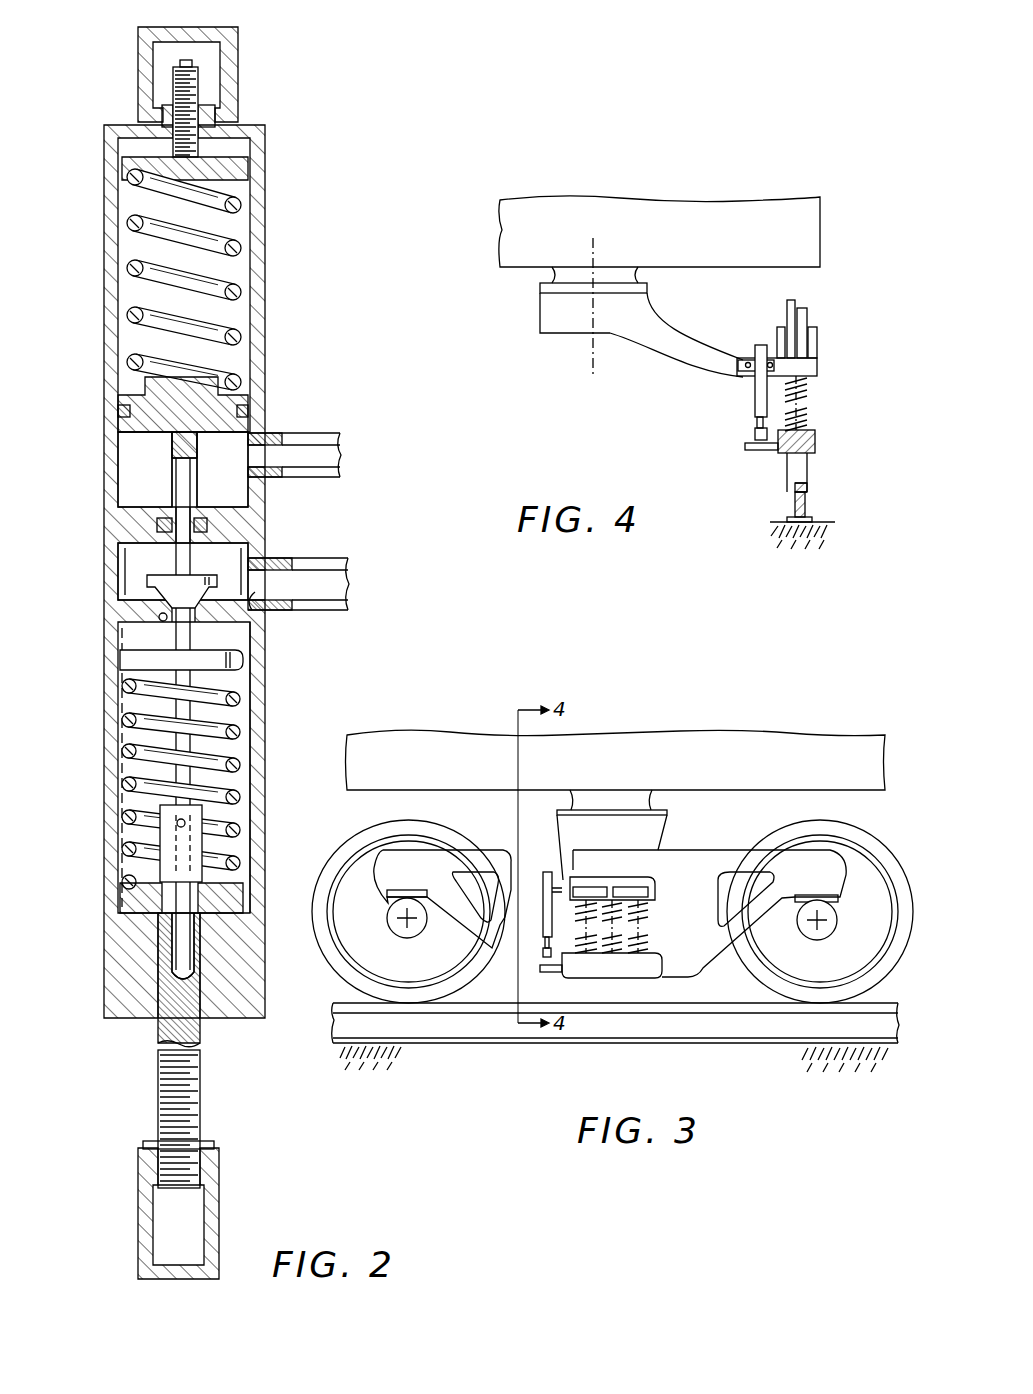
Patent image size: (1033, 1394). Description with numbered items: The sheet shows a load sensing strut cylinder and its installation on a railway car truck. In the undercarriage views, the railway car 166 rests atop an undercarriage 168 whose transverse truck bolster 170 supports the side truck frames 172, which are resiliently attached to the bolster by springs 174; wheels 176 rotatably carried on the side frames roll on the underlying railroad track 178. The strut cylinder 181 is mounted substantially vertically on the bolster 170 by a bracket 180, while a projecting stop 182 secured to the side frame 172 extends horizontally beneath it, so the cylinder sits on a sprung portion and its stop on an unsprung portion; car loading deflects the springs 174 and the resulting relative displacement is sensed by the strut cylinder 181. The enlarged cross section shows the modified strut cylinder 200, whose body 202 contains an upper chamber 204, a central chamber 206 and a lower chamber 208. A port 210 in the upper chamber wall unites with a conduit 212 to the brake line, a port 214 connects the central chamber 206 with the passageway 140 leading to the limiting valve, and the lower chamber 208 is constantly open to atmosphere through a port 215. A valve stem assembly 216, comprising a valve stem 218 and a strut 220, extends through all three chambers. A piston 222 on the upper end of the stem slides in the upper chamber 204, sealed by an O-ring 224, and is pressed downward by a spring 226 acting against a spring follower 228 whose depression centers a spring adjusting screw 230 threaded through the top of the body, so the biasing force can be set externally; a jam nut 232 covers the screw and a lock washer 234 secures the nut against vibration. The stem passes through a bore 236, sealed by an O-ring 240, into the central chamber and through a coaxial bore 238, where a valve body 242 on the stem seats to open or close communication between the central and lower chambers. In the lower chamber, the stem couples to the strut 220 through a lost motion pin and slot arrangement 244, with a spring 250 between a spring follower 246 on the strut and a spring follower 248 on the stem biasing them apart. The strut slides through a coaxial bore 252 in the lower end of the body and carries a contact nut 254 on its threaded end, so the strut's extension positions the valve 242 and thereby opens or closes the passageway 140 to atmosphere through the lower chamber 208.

In FIG. 2, the passageway 140 is at (330, 570).
In FIG. 3, the railway car 166 is at (672, 747).
In FIG. 4, the railway car 166 is at (667, 220).
In FIG. 4, the undercarriage 168 is at (643, 366).
In FIG. 4, the transverse truck bolster 170 is at (552, 312).
In FIG. 3, the side truck frames 172 is at (697, 963).
In FIG. 4, the side truck frames 172 is at (819, 437).
In FIG. 3, the springs 174 is at (642, 956).
In FIG. 4, the springs 174 is at (808, 406).
In FIG. 3, the wheels 176 is at (424, 971).
In FIG. 3, the railroad track 178 is at (574, 1027).
In FIG. 4, the railroad track 178 is at (805, 511).
In FIG. 4, the bracket 180 is at (777, 364).
In FIG. 3, the strut cylinder 181 is at (543, 880).
In FIG. 4, the strut cylinder 181 is at (757, 393).
In FIG. 3, the projecting stop 182 is at (547, 977).
In FIG. 4, the projecting stop 182 is at (763, 452).
In FIG. 2, the strut cylinder 200 is at (328, 127).
In FIG. 2, the body 202 is at (262, 192).
In FIG. 2, the upper chamber 204 is at (238, 230).
In FIG. 2, the central chamber 206 is at (230, 550).
In FIG. 2, the lower chamber 208 is at (232, 712).
In FIG. 2, the port 210 is at (263, 434).
In FIG. 2, the conduit 212 is at (318, 446).
In FIG. 2, the port 214 is at (255, 610).
In FIG. 2, the port 215 is at (256, 771).
In FIG. 2, the valve stem assembly 216 is at (236, 740).
In FIG. 2, the valve stem 218 is at (176, 564).
In FIG. 2, the strut 220 is at (180, 1022).
In FIG. 2, the piston 222 is at (234, 396).
In FIG. 2, the O-ring 224 is at (245, 410).
In FIG. 2, the spring 226 is at (237, 338).
In FIG. 2, the spring follower 228 is at (246, 164).
In FIG. 2, the spring adjusting screw 230 is at (205, 87).
In FIG. 2, the jam nut 232 is at (226, 37).
In FIG. 2, the lock washer 234 is at (236, 122).
In FIG. 2, the bore 236 is at (187, 508).
In FIG. 2, the bore 238 is at (160, 622).
In FIG. 2, the O-ring 240 is at (208, 522).
In FIG. 2, the valve body 242 is at (150, 582).
In FIG. 2, the pin and slot arrangement 244 is at (247, 822).
In FIG. 2, the spring follower 246 is at (130, 899).
In FIG. 2, the spring follower 248 is at (243, 663).
In FIG. 2, the spring 250 is at (185, 850).
In FIG. 2, the coaxial bore 252 is at (205, 968).
In FIG. 2, the contact nut 254 is at (215, 1212).